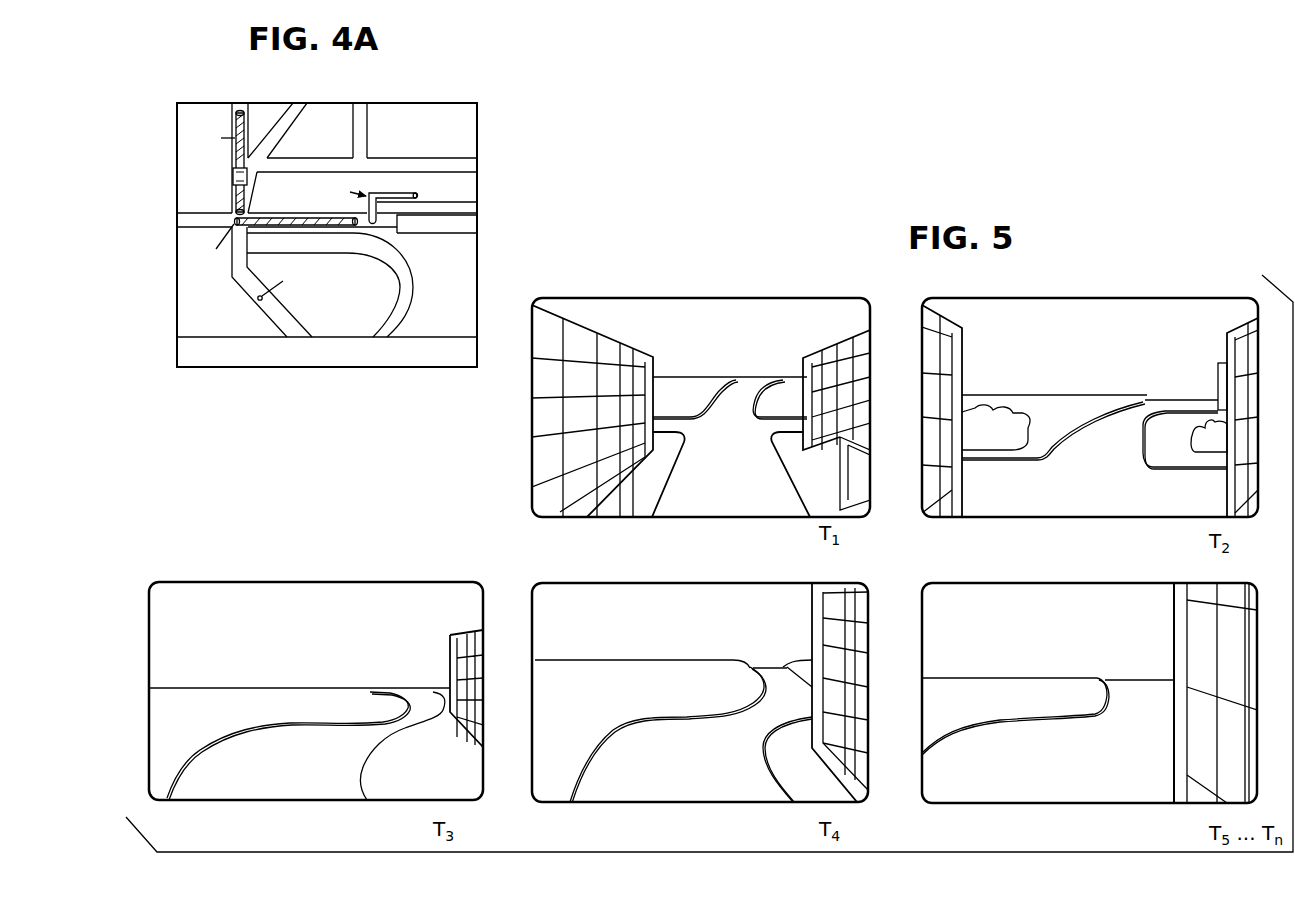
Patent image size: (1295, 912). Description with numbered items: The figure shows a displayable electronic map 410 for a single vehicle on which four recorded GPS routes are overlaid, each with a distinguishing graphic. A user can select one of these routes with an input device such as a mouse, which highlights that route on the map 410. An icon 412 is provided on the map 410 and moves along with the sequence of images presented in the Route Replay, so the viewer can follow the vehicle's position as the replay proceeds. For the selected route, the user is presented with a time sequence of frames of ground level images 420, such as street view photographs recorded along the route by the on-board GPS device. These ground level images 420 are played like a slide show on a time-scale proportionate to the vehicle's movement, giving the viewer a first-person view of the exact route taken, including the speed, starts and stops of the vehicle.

In FIG. 4A, the displayable electronic map 410 is at (419, 99).
In FIG. 4A, the icon 412 is at (231, 178).
In FIG. 5, the ground level images 420 is at (806, 298).